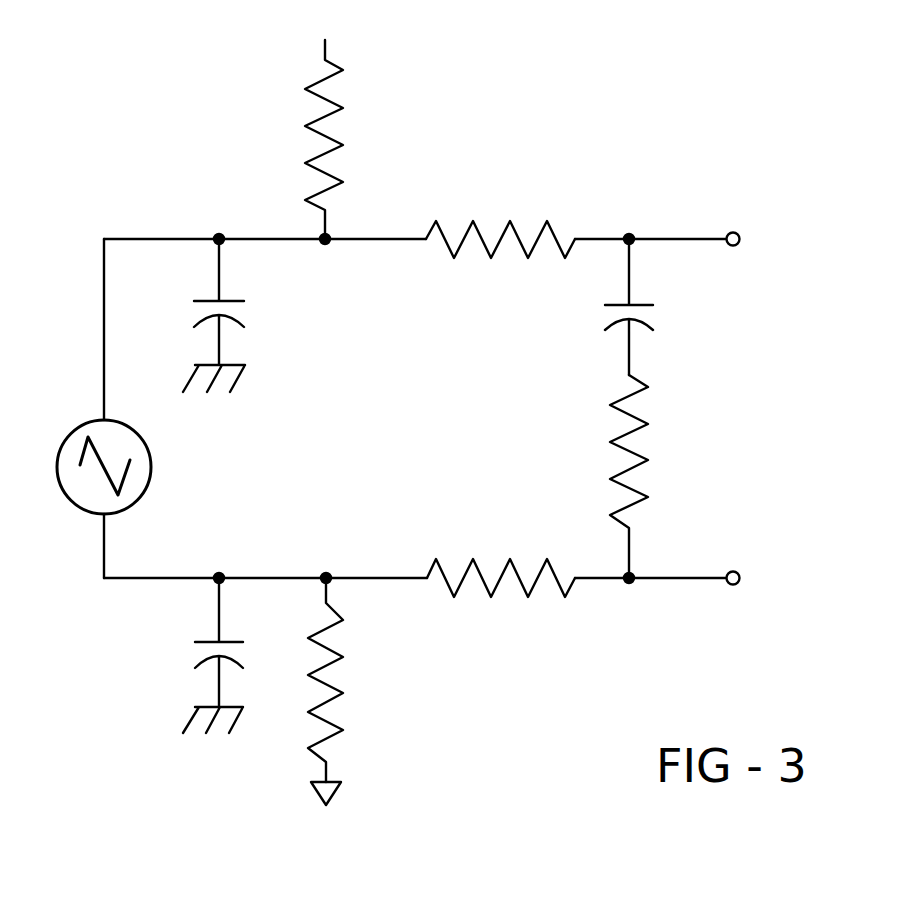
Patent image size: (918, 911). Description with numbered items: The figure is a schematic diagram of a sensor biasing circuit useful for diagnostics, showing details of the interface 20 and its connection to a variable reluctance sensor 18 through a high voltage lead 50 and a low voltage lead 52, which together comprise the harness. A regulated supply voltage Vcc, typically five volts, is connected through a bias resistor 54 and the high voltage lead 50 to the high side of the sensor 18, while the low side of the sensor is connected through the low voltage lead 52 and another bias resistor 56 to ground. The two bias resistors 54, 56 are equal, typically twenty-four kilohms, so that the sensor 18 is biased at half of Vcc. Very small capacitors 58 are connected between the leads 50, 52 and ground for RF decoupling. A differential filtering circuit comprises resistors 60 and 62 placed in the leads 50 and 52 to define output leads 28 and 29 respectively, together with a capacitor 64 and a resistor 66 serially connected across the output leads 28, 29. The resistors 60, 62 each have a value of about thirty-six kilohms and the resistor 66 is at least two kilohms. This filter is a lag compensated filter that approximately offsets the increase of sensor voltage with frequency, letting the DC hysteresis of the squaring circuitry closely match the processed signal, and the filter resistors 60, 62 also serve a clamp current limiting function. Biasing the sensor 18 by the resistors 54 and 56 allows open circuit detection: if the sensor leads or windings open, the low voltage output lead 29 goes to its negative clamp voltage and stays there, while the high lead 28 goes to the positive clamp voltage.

The variable reluctance sensor 18 is at (152, 470).
The interface 20 is at (221, 183).
The output lead 28 is at (663, 237).
The output lead 29 is at (684, 580).
The high voltage lead 50 is at (189, 238).
The low voltage lead 52 is at (130, 578).
The bias resistor 54 is at (308, 118).
The bias resistor 56 is at (316, 720).
The capacitors 58 is at (232, 300).
The resistor 60 is at (498, 246).
The resistor 62 is at (467, 566).
The capacitor 64 is at (648, 302).
The resistor 66 is at (637, 432).